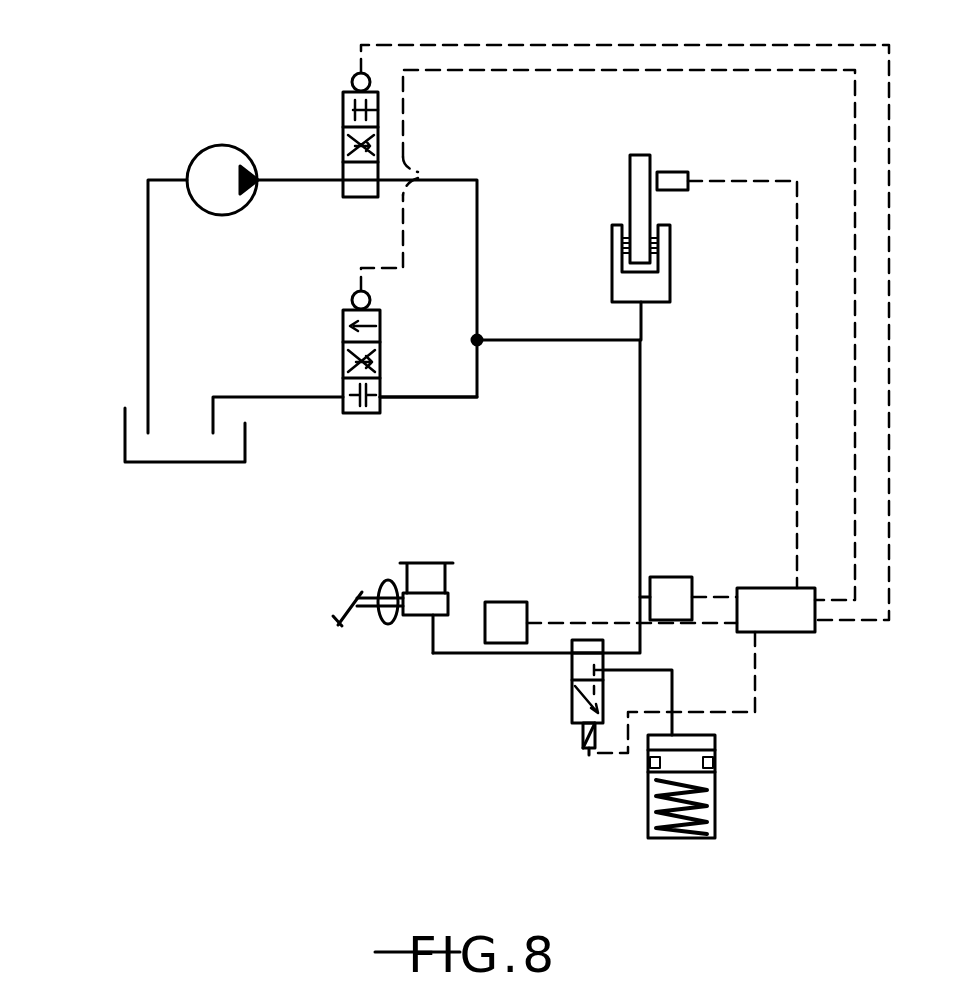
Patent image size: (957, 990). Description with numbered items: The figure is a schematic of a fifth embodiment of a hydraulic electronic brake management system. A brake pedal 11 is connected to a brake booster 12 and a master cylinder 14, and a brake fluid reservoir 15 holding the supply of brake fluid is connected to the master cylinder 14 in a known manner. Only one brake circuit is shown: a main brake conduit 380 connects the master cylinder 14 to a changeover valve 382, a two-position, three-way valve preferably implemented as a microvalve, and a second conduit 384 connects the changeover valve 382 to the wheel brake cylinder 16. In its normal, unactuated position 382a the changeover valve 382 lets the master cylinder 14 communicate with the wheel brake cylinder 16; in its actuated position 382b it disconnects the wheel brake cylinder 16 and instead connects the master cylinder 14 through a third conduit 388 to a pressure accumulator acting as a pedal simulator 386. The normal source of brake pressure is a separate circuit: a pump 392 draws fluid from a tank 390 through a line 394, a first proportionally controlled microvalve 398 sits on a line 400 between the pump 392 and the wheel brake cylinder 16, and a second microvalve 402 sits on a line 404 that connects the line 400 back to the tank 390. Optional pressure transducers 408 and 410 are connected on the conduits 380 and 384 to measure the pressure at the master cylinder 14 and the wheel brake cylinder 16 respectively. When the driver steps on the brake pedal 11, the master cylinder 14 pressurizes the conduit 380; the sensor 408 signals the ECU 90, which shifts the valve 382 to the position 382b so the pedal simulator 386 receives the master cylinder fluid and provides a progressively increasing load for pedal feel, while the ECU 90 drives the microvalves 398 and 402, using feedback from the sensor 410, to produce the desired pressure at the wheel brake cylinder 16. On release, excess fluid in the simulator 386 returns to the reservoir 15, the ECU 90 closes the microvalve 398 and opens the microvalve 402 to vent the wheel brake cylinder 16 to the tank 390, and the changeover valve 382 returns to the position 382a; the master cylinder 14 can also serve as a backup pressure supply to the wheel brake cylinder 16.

The brake pedal 11 is at (338, 612).
The brake booster 12 is at (382, 620).
The master cylinder 14 is at (450, 600).
The brake fluid reservoir 15 is at (395, 580).
The wheel brake cylinder 16 is at (670, 260).
The ECU 90 is at (790, 632).
The main brake conduit 380 is at (433, 656).
The changeover valve 382 is at (531, 716).
The normal unactuated position 382a is at (573, 660).
The second actuated position 382b is at (574, 724).
The second conduit 384 is at (642, 390).
The pedal simulator 386 is at (647, 812).
The third conduit 388 is at (673, 694).
The tank 390 is at (125, 434).
The pump 392 is at (222, 215).
The line 394 is at (148, 260).
The first proportionally controlled microvalve 398 is at (343, 147).
The line 400 is at (478, 197).
The second microvalve 402 is at (343, 356).
The line 404 is at (407, 398).
The pressure transducer 408 is at (528, 608).
The pressure transducer 410 is at (672, 577).